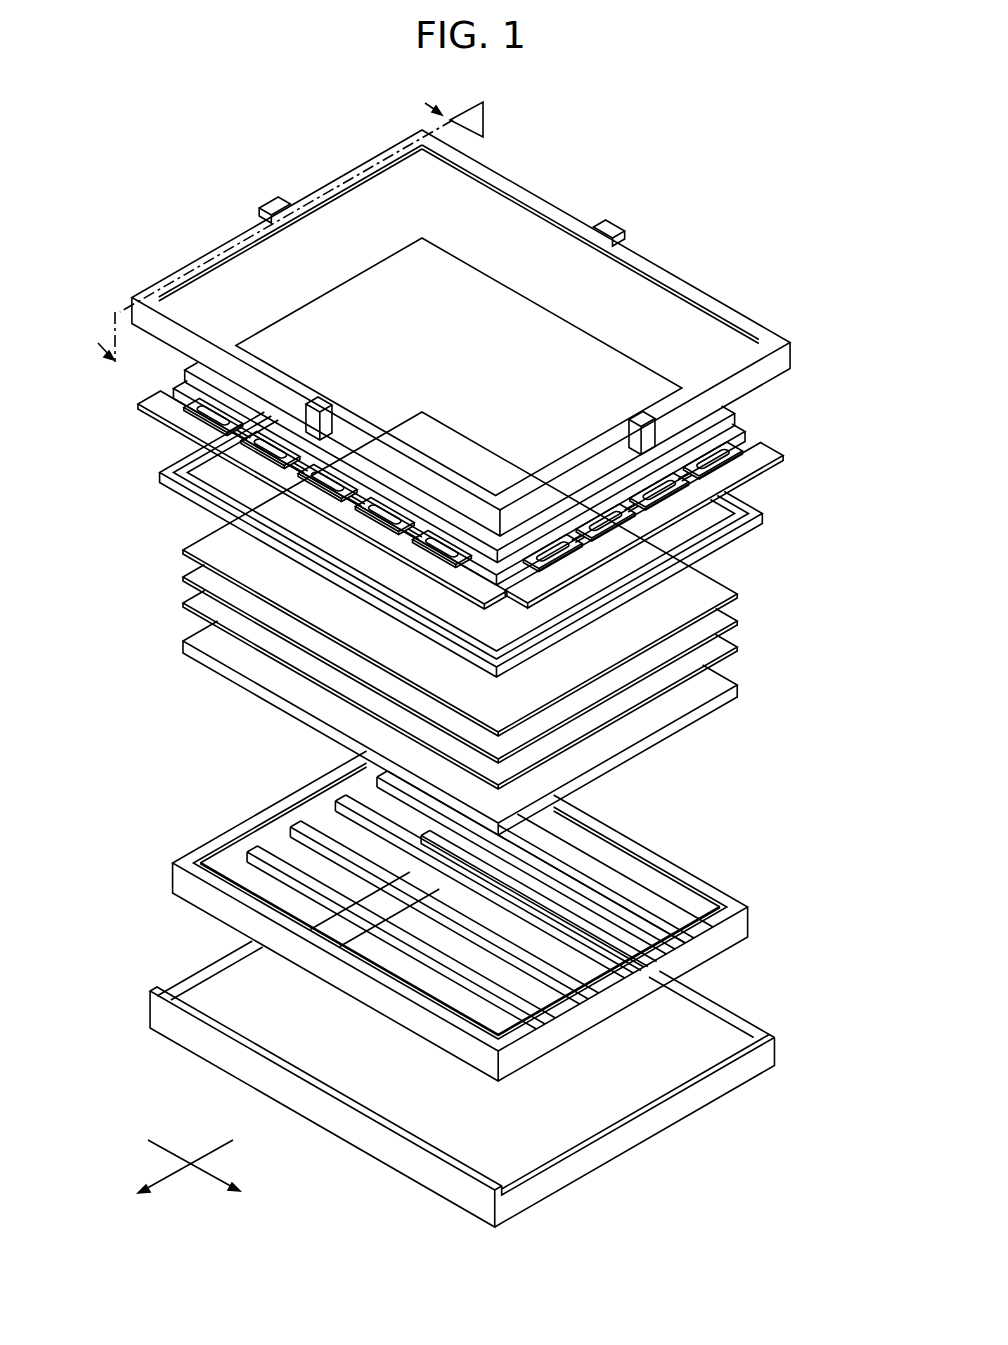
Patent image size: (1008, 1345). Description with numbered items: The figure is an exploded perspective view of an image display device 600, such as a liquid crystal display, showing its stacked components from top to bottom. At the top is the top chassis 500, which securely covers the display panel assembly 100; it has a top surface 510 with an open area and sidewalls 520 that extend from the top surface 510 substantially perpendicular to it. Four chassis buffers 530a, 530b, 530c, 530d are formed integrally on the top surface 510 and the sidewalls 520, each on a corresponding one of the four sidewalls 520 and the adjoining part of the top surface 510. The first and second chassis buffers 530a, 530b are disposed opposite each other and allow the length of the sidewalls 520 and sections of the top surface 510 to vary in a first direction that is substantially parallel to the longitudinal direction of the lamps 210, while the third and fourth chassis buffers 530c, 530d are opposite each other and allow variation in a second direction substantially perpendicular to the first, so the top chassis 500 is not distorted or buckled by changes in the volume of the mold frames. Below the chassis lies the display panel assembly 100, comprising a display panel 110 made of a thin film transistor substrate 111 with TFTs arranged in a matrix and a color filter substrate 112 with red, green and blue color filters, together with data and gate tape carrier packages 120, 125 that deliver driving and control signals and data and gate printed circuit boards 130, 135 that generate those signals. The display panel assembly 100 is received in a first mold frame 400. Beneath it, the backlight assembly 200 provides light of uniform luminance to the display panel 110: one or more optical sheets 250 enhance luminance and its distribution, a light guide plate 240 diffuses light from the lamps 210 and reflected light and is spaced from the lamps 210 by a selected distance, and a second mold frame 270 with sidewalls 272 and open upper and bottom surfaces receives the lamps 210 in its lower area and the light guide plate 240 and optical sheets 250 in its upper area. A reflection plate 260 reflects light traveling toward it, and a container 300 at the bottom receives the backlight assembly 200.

The image display device 600 is at (628, 96).
The top chassis 500 is at (745, 302).
The top surface 510 is at (765, 326).
The sidewalls 520 is at (789, 360).
The first chassis buffer 530a is at (328, 396).
The second chassis buffer 530b is at (612, 226).
The third chassis buffer 530c is at (628, 418).
The fourth chassis buffer 530d is at (272, 210).
The display panel assembly 100 is at (160, 384).
The display panel 110 is at (826, 398).
The thin film transistor substrate 111 is at (742, 432).
The color filter substrate 112 is at (727, 418).
The data tape carrier package 120 is at (200, 412).
The gate tape carrier package 125 is at (758, 474).
The data printed circuit board 130 is at (150, 405).
The gate printed circuit board 135 is at (729, 458).
The first mold frame 400 is at (740, 540).
The backlight assembly 200 is at (833, 580).
The optical sheets 250 is at (745, 583).
The light guide plate 240 is at (686, 726).
The lamps 210 is at (562, 888).
The sidewalls 272 is at (662, 883).
The second mold frame 270 is at (750, 920).
The reflection plate 260 is at (690, 1032).
The container 300 is at (775, 1053).